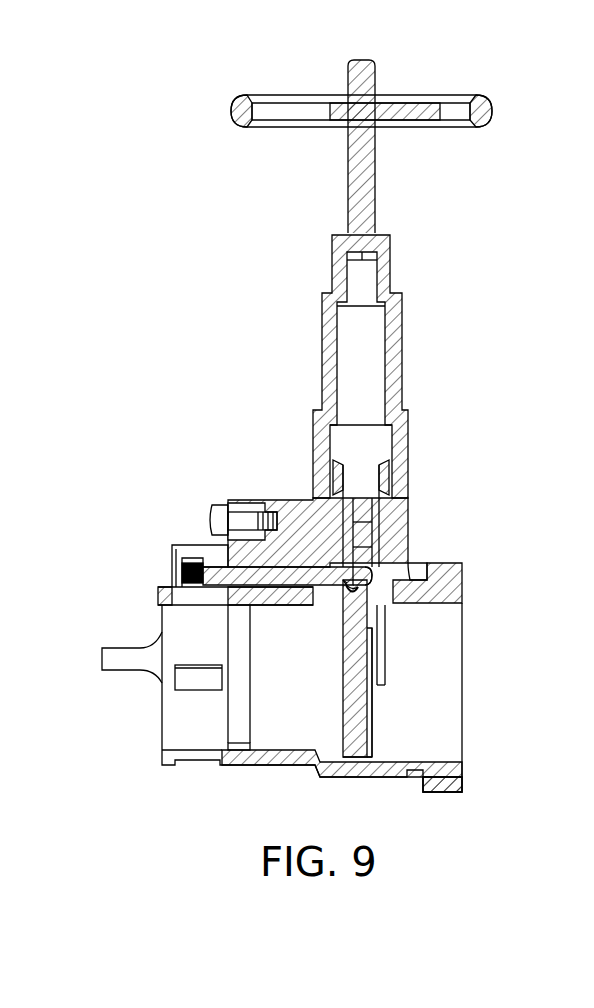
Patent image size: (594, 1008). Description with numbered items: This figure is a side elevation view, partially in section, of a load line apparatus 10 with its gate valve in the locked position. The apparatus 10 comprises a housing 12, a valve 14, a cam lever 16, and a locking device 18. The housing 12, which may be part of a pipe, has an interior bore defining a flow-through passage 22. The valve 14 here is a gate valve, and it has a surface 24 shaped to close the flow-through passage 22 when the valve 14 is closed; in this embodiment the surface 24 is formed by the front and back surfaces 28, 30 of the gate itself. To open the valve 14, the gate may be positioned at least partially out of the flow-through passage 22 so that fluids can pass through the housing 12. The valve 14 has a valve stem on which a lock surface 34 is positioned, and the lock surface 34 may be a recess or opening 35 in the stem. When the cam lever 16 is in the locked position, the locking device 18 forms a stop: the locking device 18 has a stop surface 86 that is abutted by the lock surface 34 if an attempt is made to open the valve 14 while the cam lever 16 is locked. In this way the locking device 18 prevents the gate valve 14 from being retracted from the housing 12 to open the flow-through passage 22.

The load line apparatus 10 is at (282, 140).
The housing 12 is at (248, 767).
The valve 14 is at (375, 703).
The cam lever 16 is at (140, 668).
The locking device 18 is at (301, 563).
The flow-through passage 22 is at (402, 753).
The surface 24 is at (372, 690).
The front surface 28 is at (343, 704).
The back surface 30 is at (372, 714).
The lock surface 34 is at (360, 578).
The recess or opening 35 is at (378, 577).
The stop surface 86 is at (352, 588).